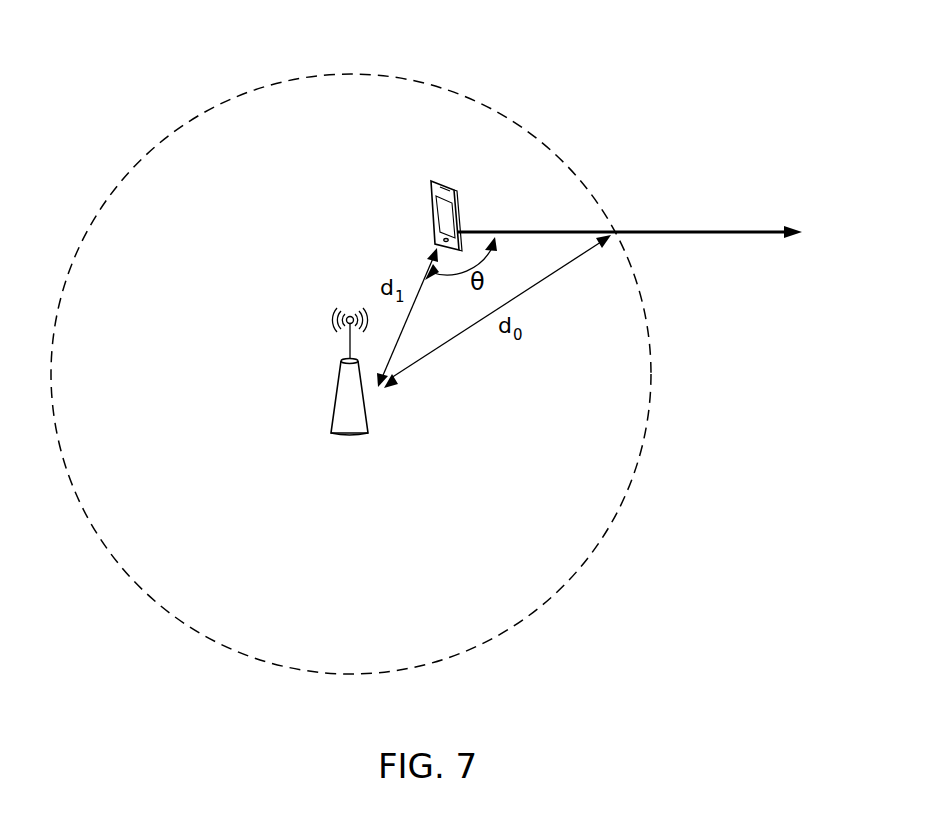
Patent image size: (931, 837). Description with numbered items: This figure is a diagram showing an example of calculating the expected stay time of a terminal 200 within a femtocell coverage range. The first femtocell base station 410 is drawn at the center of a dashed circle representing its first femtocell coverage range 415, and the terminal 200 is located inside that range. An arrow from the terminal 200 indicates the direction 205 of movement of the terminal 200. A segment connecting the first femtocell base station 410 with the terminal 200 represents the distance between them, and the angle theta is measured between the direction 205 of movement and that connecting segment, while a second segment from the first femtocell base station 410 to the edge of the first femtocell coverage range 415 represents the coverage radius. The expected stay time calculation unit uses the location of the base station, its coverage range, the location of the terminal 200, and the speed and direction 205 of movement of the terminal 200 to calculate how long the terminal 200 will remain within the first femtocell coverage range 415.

The first femtocell coverage range 415 is at (367, 76).
The terminal 200 is at (445, 182).
The direction of movement of the terminal 205 is at (695, 231).
The first femtocell base station 410 is at (337, 400).